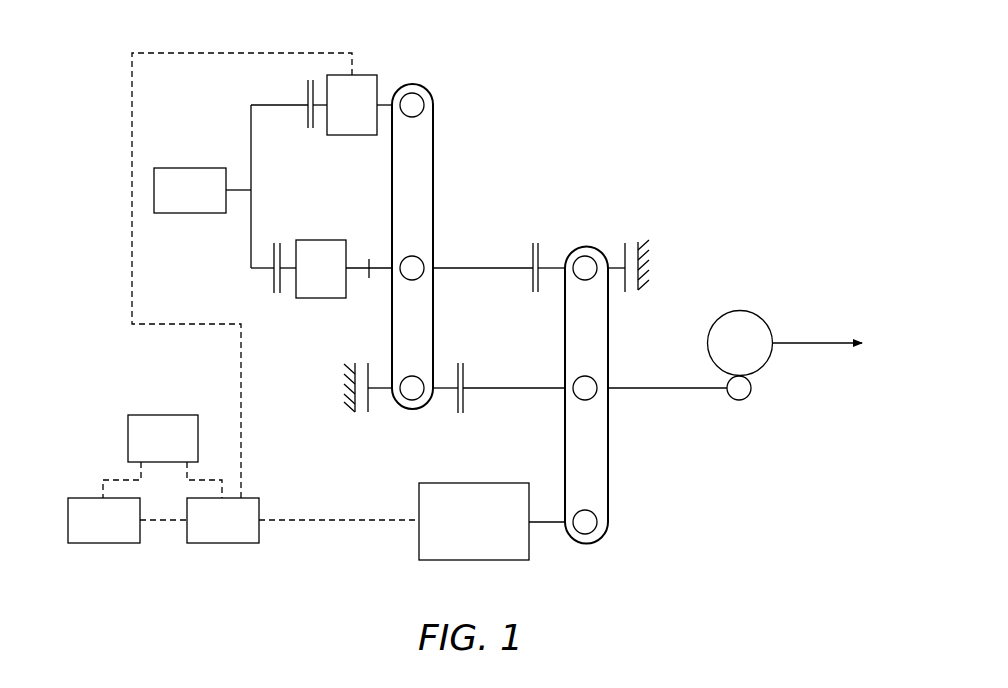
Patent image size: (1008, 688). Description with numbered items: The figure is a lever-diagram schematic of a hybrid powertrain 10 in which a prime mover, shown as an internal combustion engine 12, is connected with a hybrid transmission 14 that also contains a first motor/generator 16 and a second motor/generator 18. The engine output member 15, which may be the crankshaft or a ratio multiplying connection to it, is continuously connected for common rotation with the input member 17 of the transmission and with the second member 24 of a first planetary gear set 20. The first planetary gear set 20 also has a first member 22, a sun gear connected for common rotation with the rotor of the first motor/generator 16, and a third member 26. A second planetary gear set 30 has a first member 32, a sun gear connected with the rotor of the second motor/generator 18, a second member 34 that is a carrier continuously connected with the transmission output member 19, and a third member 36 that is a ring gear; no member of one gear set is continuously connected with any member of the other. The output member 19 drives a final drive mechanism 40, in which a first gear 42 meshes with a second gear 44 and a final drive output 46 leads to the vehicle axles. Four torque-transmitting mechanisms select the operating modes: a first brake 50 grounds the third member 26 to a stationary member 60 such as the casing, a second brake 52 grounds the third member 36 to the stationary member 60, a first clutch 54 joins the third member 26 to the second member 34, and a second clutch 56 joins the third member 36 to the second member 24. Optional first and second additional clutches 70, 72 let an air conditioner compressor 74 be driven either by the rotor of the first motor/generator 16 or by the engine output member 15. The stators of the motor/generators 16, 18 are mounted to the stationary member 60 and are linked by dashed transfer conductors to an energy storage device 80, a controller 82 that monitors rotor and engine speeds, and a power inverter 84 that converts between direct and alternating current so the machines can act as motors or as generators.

The hybrid powertrain 10 is at (612, 80).
The internal combustion engine 12 is at (313, 269).
The hybrid transmission 14 is at (510, 203).
The engine output member 15 is at (363, 263).
The first motor/generator 16 is at (352, 105).
The input member 17 is at (380, 276).
The second motor/generator 18 is at (492, 521).
The output member 19 is at (683, 392).
The first planetary gear set 20 is at (433, 168).
The first member 22 is at (418, 96).
The second member 24 is at (420, 260).
The third member 26 is at (412, 402).
The second planetary gear set 30 is at (608, 505).
The first member 32 is at (585, 535).
The second member 34 is at (588, 401).
The third member 36 is at (588, 281).
The final drive mechanism 40 is at (751, 412).
The first gear 42 is at (751, 383).
The second gear 44 is at (742, 310).
The final drive output 46 is at (825, 343).
The first brake 50 is at (363, 422).
The second brake 52 is at (639, 228).
The first clutch 54 is at (466, 422).
The second clutch 56 is at (545, 230).
The stationary member 60 is at (349, 400).
The first additional clutch 70 is at (308, 70).
The second additional clutch 72 is at (274, 300).
The air conditioner compressor 74 is at (202, 190).
The energy storage device 80 is at (162, 456).
The controller 82 is at (127, 520).
The power inverter 84 is at (275, 298).